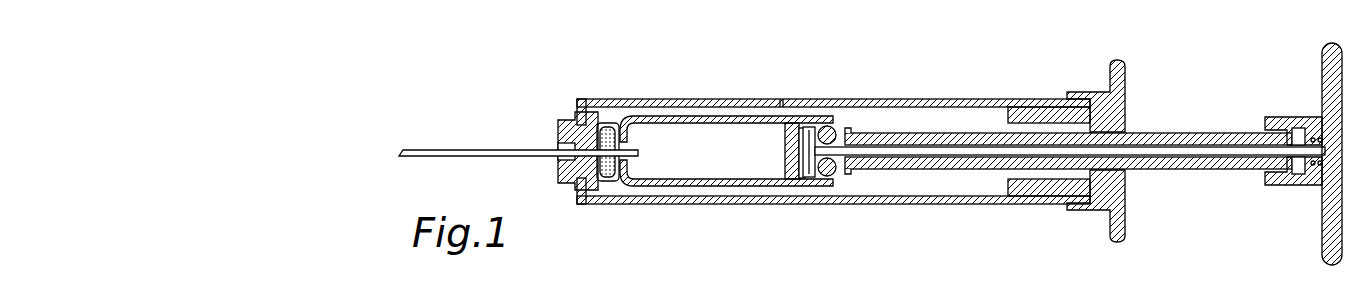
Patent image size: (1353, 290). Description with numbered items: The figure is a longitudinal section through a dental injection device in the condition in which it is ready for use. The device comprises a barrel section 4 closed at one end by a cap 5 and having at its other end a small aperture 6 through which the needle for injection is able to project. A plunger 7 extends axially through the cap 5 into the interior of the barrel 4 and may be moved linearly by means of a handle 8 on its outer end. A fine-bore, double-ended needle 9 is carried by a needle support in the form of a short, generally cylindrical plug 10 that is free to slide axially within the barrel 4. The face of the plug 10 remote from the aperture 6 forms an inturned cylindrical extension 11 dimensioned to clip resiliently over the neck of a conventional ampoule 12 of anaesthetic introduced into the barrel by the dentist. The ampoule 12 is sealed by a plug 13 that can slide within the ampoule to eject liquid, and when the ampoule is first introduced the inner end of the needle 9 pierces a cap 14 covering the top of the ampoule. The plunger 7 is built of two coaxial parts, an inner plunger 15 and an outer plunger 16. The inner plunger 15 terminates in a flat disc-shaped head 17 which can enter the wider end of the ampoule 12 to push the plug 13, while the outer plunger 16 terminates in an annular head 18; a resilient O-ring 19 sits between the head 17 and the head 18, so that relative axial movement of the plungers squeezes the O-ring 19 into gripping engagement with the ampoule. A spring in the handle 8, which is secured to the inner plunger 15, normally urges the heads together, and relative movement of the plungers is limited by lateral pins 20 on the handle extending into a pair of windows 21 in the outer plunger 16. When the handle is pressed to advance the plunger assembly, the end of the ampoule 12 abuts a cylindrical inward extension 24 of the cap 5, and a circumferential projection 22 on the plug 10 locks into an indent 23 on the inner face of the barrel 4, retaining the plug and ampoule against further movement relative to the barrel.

The barrel section 4 is at (698, 205).
The cap 5 is at (1125, 82).
The aperture 6 is at (558, 136).
The plunger 7 is at (1188, 130).
The handle 8 is at (1324, 72).
The needle 9 is at (454, 148).
The plug 10 is at (572, 167).
The inturned cylindrical extension 11 is at (605, 186).
The ampoule 12 is at (706, 116).
The plug 13 is at (785, 150).
The cap 14 is at (618, 148).
The inner plunger 15 is at (957, 148).
The outer plunger 16 is at (1205, 171).
The head 17 is at (810, 180).
The annular head 18 is at (853, 128).
The O-ring 19 is at (830, 130).
The lateral pins 20 is at (1297, 176).
The windows 21 is at (1299, 130).
The circumferential projection 22 is at (608, 108).
The indent 23 is at (802, 76).
The cylindrical inward extension 24 is at (1010, 196).